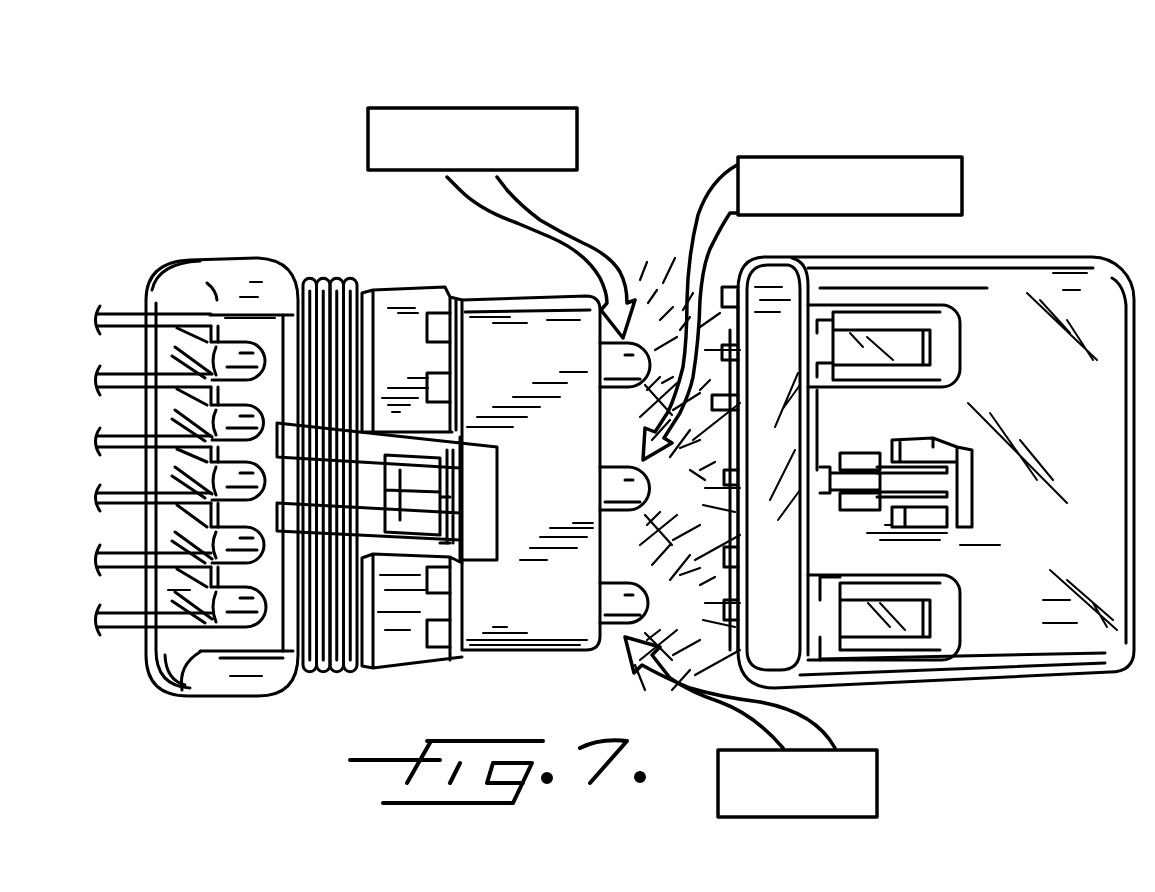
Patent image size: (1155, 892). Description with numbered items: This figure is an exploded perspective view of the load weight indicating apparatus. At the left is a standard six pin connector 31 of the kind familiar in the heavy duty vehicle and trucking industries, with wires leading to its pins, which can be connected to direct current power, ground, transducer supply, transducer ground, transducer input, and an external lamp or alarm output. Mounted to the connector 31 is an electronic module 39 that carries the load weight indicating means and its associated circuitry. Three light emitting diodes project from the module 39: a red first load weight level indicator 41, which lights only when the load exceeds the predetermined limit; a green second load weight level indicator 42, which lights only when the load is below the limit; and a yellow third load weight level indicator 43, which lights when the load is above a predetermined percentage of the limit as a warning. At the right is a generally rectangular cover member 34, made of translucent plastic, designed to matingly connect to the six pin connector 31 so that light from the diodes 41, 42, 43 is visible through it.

The six pin connector 31 is at (302, 660).
The electronic module 39 is at (505, 652).
The cover member 34 is at (947, 680).
The first load weight level indicator 41 is at (877, 785).
The second load weight level indicator 42 is at (493, 108).
The third load weight level indicator 43 is at (850, 157).